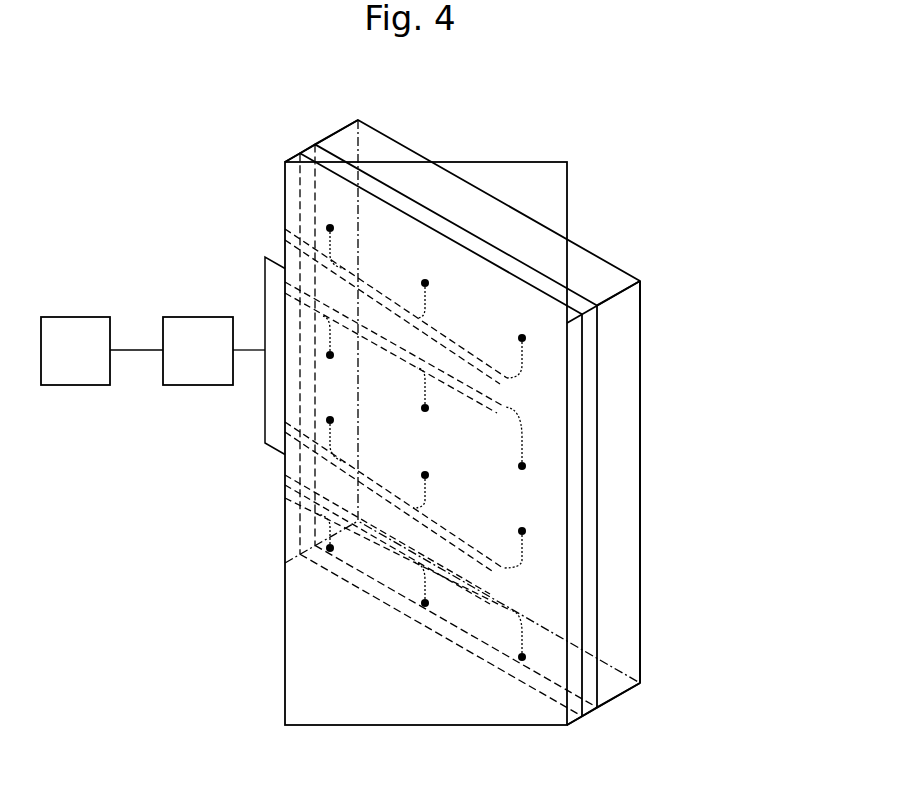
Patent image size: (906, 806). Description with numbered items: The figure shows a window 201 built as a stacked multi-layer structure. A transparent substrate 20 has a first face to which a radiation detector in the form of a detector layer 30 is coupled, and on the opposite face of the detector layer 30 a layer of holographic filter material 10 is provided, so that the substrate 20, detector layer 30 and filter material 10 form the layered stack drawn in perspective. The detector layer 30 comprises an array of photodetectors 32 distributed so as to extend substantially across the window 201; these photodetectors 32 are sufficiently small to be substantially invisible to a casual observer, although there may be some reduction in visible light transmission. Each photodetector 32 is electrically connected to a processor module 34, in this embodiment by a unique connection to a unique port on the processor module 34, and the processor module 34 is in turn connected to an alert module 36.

The window 201 is at (690, 219).
The holographic filter material 10 is at (577, 612).
The transparent substrate 20 is at (623, 335).
The detector layer 30 is at (593, 477).
The photodetectors 32 is at (334, 226).
The processor module 34 is at (203, 315).
The alert module 36 is at (77, 315).